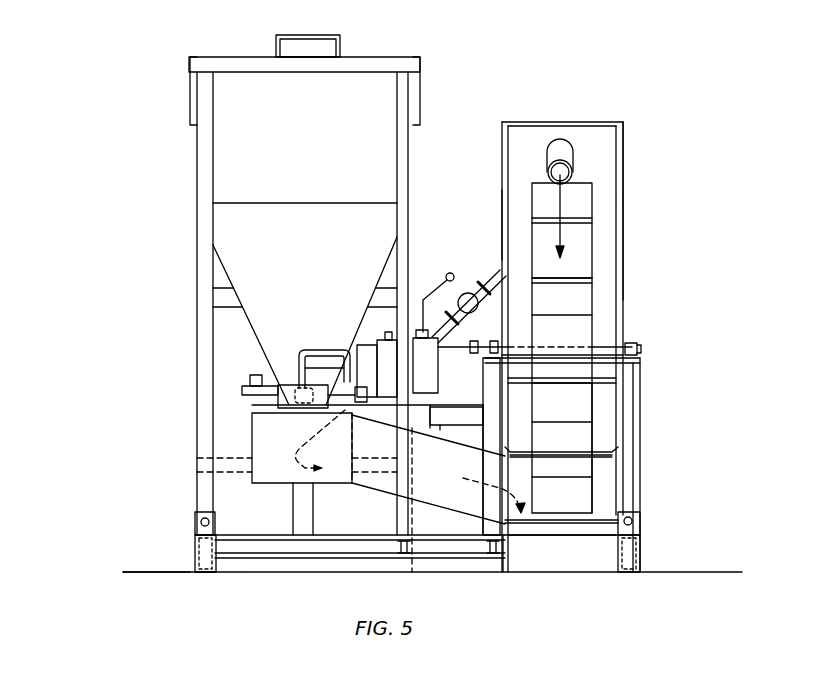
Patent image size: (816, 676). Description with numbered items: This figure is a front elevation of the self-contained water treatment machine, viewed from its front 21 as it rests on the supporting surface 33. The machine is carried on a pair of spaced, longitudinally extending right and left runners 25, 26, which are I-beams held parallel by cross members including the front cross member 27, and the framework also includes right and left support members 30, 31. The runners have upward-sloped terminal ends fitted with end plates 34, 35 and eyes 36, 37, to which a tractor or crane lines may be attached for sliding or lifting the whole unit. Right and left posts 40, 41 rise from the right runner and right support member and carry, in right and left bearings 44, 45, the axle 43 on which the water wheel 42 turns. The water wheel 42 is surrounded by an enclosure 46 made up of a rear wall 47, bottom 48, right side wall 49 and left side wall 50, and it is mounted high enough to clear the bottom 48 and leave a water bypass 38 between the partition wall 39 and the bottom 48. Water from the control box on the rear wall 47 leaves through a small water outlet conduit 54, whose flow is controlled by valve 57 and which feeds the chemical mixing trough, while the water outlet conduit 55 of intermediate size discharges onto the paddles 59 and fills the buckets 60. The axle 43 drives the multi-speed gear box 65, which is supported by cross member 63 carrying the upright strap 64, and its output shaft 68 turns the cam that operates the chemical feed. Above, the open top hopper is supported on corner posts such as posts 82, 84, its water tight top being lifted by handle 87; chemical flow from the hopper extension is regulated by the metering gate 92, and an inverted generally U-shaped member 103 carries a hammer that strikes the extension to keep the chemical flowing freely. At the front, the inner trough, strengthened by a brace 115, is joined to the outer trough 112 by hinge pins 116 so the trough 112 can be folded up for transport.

The front 21 is at (312, 158).
The right runner 25 is at (640, 550).
The left runner 26 is at (195, 548).
The front cross member 27 is at (300, 545).
The right support member 30 is at (493, 566).
The left support member 31 is at (405, 566).
The supporting surface 33 is at (125, 570).
The end plate 34 is at (640, 566).
The end plate 35 is at (197, 565).
The eye 36 is at (632, 521).
The eye 37 is at (200, 517).
The water bypass 38 is at (598, 530).
The partition wall 39 is at (612, 513).
The right post 40 is at (645, 390).
The left post 41 is at (500, 400).
The water wheel 42 is at (590, 256).
The axle 43 is at (641, 350).
The right bearing 44 is at (632, 343).
The left bearing 45 is at (500, 345).
The enclosure 46 is at (625, 140).
The rear wall 47 is at (528, 135).
The bottom 48 is at (552, 530).
The right side wall 49 is at (620, 243).
The left side wall 50 is at (502, 205).
The water outlet conduit 54 is at (492, 285).
The water outlet conduit 55 is at (568, 160).
The valve 57 is at (450, 272).
The paddles 59 is at (585, 210).
The buckets 60 is at (585, 310).
The cross member 63 is at (445, 428).
The upright strap 64 is at (432, 410).
The multi-speed gear box 65 is at (428, 378).
The output shaft 68 is at (370, 345).
The post 82 is at (408, 165).
The post 84 is at (197, 140).
The handle 87 is at (340, 38).
The metering gate 92 is at (264, 378).
The inverted generally U-shaped member 103 is at (302, 347).
The trough 112 is at (503, 573).
The brace 115 is at (610, 450).
The hinge pins 116 is at (580, 448).